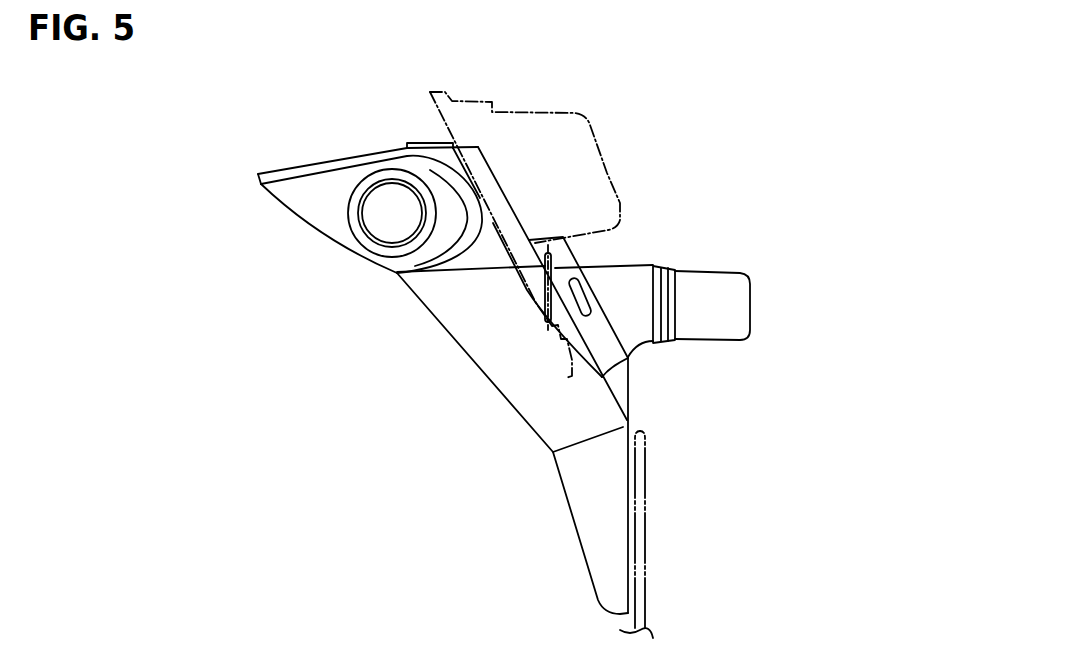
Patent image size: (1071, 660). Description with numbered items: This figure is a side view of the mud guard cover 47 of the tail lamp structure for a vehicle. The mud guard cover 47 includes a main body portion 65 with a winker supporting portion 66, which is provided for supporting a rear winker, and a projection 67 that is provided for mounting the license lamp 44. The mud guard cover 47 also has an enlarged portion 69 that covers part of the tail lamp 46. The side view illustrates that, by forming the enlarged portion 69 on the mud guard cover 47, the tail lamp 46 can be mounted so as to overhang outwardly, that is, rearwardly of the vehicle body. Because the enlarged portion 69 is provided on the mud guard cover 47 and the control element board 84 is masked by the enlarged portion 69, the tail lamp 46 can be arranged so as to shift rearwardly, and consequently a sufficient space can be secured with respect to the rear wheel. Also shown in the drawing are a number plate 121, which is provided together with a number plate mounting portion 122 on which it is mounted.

The license lamp 44 is at (752, 300).
The tail lamp 46 is at (638, 142).
The mud guard cover 47 is at (257, 222).
The main body portion 65 is at (622, 374).
The winker supporting portion 66 is at (338, 182).
The projection 67 is at (645, 264).
The enlarged portion 69 is at (640, 348).
The control element board 84 is at (595, 252).
The number plate 121 is at (646, 507).
The number plate mounting portion 122 is at (634, 461).